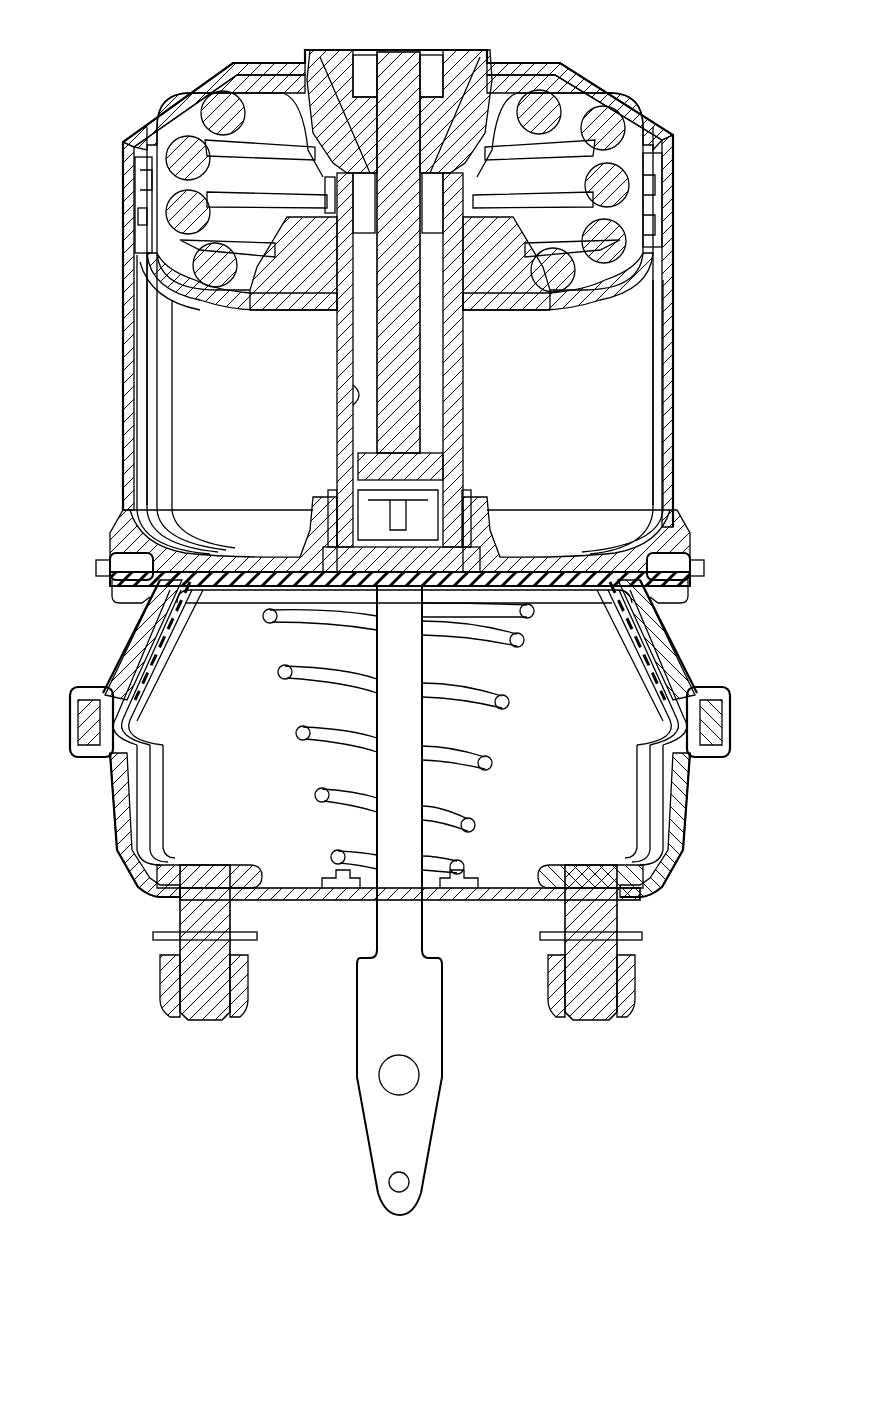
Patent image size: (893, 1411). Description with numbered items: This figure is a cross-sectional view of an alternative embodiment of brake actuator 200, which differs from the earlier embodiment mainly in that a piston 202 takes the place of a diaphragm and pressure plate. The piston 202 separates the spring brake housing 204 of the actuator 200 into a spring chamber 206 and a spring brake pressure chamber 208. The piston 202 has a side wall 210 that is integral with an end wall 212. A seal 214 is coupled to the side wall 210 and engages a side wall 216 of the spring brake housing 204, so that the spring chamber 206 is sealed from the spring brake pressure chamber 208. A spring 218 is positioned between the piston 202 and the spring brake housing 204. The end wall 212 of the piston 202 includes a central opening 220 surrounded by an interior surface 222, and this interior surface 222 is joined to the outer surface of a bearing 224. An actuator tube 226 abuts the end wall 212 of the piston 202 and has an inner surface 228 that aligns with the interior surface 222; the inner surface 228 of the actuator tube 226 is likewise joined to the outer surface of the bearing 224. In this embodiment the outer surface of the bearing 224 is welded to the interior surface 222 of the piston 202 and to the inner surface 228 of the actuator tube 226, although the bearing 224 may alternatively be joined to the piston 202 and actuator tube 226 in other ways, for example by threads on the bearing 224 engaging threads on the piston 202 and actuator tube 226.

The brake actuator 200 is at (667, 53).
The piston 202 is at (627, 295).
The spring brake housing 204 is at (672, 399).
The spring chamber 206 is at (630, 143).
The spring brake pressure chamber 208 is at (620, 372).
The side wall 210 is at (150, 222).
The end wall 212 is at (195, 306).
The seal 214 is at (657, 228).
The side wall 216 is at (673, 180).
The spring 218 is at (583, 118).
The central opening 220 is at (463, 72).
The interior surface 222 is at (307, 130).
The bearing 224 is at (345, 220).
The actuator tube 226 is at (343, 368).
The inner surface 228 is at (348, 404).